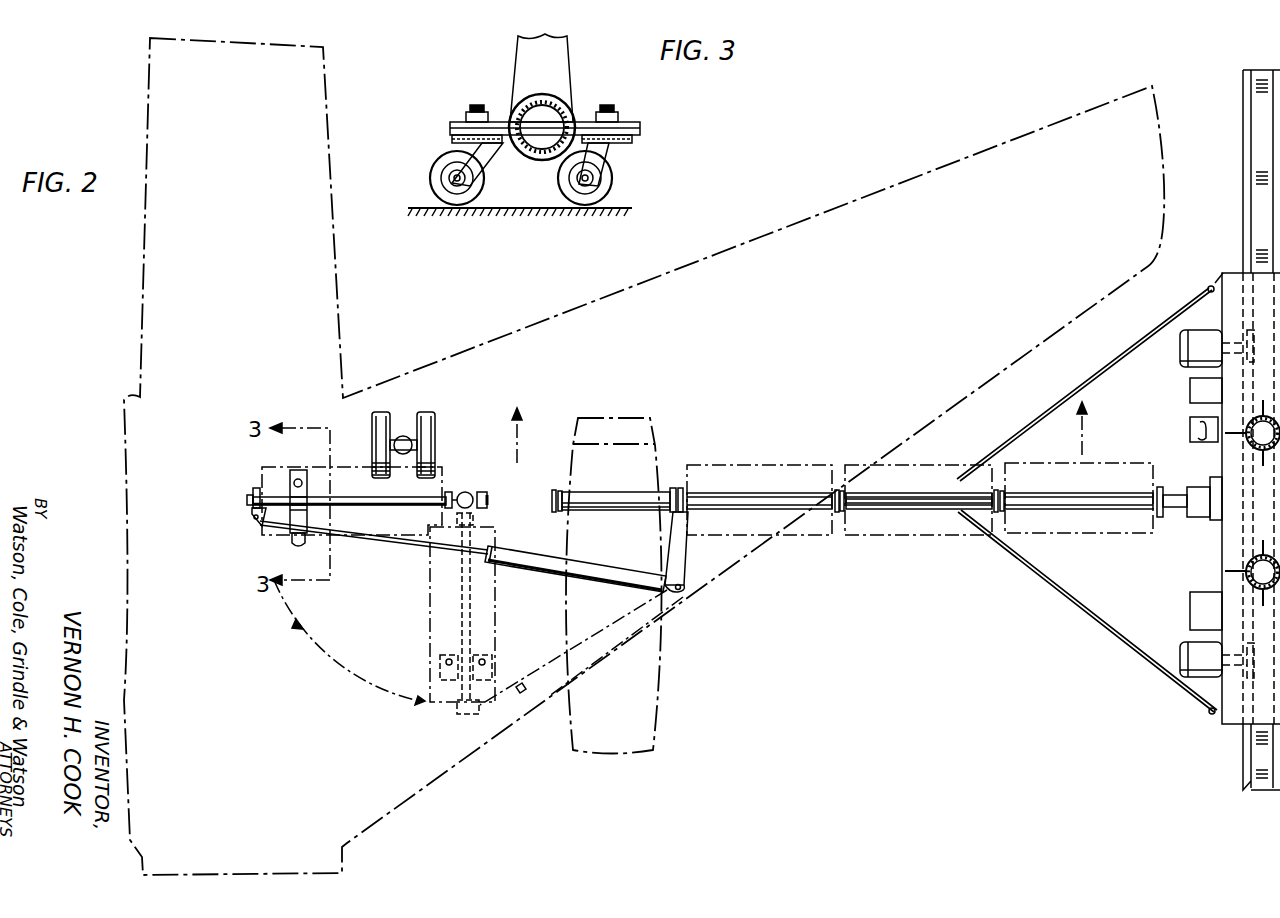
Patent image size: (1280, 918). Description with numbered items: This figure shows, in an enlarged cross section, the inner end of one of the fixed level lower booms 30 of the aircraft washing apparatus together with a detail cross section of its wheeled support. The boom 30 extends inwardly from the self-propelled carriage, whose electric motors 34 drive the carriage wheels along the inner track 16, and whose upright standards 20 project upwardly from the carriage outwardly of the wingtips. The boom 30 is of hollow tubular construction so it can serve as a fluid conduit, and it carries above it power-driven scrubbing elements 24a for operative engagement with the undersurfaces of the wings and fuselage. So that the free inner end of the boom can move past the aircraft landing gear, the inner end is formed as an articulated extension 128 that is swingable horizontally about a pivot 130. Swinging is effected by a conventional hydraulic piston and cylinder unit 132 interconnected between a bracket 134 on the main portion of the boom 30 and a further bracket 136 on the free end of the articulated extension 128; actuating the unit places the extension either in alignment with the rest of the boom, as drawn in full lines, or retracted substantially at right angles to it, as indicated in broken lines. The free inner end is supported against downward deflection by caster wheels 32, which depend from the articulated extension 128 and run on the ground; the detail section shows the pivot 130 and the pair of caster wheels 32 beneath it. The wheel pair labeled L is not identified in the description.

In FIG. 2, the inner track 16 is at (1260, 157).
In FIG. 2, the standards 20 is at (1248, 423).
In FIG. 2, the scrubbing element 24a is at (537, 503).
In FIG. 2, the fixed level lower boom 30 is at (888, 511).
In FIG. 3, the caster wheels 32 is at (431, 172).
In FIG. 2, the caster wheels 32 is at (293, 545).
In FIG. 2, the electric motors 34 is at (1182, 353).
In FIG. 3, the articulated extension 128 is at (517, 152).
In FIG. 2, the articulated extension 128 is at (376, 506).
In FIG. 3, the pivot 130 is at (505, 120).
In FIG. 2, the pivot 130 is at (290, 477).
In FIG. 2, the piston and cylinder unit 132 is at (537, 570).
In FIG. 2, the bracket 134 is at (688, 553).
In FIG. 2, the bracket 136 is at (252, 513).
In FIG. 2, the wheels L is at (372, 432).